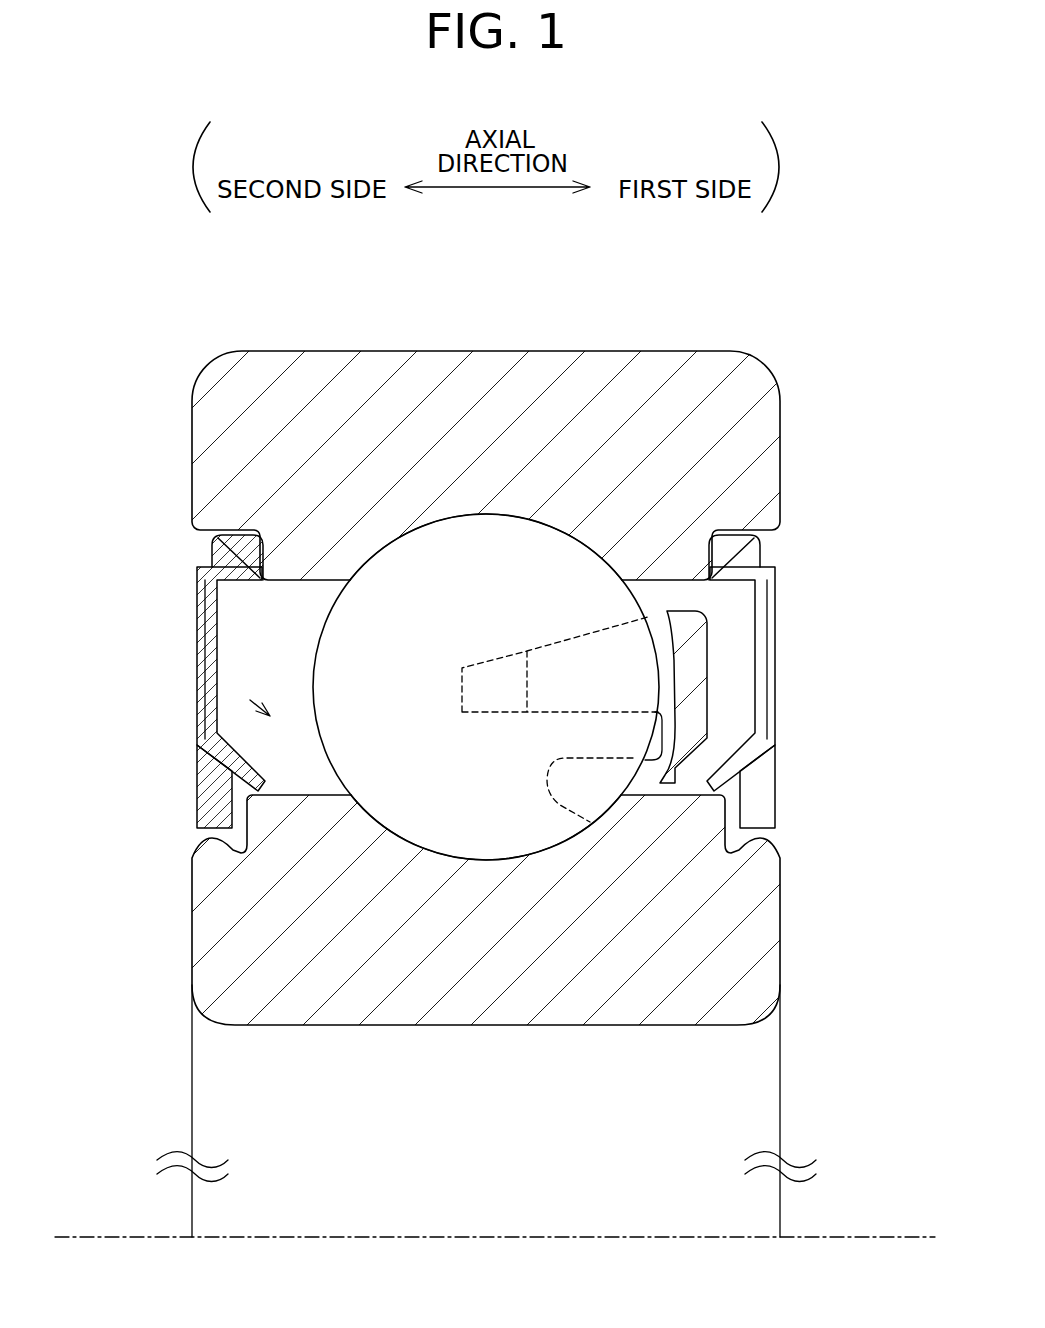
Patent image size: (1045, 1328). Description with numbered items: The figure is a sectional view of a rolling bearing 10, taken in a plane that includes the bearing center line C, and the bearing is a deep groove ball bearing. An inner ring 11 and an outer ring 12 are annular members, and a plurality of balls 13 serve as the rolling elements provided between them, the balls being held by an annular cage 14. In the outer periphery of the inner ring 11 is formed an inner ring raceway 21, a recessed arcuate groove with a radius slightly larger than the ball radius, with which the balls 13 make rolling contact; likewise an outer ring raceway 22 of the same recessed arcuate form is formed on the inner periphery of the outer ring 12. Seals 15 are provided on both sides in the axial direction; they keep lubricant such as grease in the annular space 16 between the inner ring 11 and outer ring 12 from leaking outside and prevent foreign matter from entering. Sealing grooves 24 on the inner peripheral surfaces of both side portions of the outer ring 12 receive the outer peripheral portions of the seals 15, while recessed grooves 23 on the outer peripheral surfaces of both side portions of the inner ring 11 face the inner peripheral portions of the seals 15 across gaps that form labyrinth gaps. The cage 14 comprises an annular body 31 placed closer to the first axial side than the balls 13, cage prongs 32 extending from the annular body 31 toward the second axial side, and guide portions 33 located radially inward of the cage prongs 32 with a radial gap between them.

The rolling bearing 10 is at (769, 363).
The inner ring 11 is at (192, 900).
The outer ring 12 is at (192, 462).
The ball 13 is at (320, 644).
The cage 14 is at (762, 648).
The seal 15 is at (205, 740).
The annular space 16 is at (245, 697).
The inner ring raceway 21 is at (374, 820).
The outer ring raceway 22 is at (375, 555).
The recessed groove 23 is at (197, 815).
The sealing groove 24 is at (212, 548).
The annular body 31 is at (695, 675).
The cage prong 32 is at (565, 636).
The guide portion 33 is at (552, 805).
The center line C is at (886, 1230).